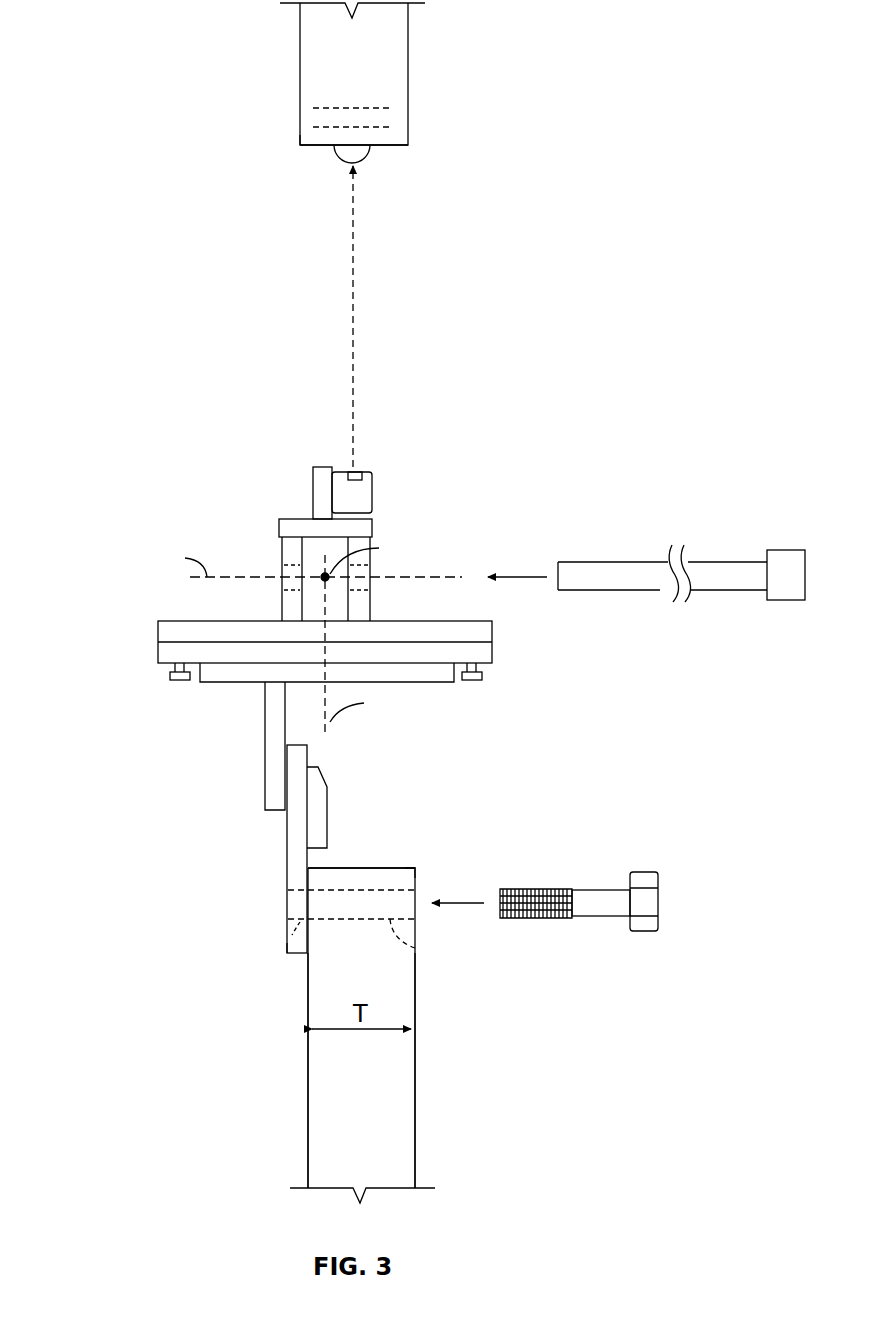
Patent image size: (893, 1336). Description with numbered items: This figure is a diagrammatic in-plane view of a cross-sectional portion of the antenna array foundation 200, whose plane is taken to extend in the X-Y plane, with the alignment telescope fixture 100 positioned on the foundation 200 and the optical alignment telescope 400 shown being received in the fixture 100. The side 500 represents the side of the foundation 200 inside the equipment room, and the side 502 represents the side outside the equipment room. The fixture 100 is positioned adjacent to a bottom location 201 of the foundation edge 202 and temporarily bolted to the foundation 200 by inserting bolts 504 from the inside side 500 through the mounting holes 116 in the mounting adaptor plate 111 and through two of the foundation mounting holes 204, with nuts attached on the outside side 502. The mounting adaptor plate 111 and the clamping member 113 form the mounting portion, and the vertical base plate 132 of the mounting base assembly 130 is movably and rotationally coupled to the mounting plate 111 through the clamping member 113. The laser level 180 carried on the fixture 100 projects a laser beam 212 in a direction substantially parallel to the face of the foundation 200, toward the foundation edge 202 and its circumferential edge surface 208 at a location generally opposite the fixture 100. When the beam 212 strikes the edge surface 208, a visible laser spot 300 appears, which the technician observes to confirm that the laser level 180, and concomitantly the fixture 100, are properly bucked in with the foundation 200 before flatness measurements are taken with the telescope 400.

The alignment telescope fixture 100 is at (280, 483).
The mounting adaptor plate 111 is at (287, 850).
The clamping member 113 is at (327, 805).
The mounting holes 116 is at (286, 943).
The mounting base assembly 130 is at (430, 690).
The vertical base plate 132 is at (265, 735).
The laser level 180 is at (372, 493).
The antenna array foundation 200 is at (378, 87).
The bottom location 201 is at (396, 832).
The foundation edge 202 is at (398, 143).
The foundation mounting holes 204 is at (318, 108).
The circumferential edge surface 208 is at (316, 152).
The laser beam 212 is at (355, 318).
The laser spot 300 is at (362, 154).
The optical alignment telescope 400 is at (648, 540).
The inside side of foundation 500 is at (308, 1043).
The outside side of foundation 502 is at (415, 1015).
The bolts 504 is at (603, 888).